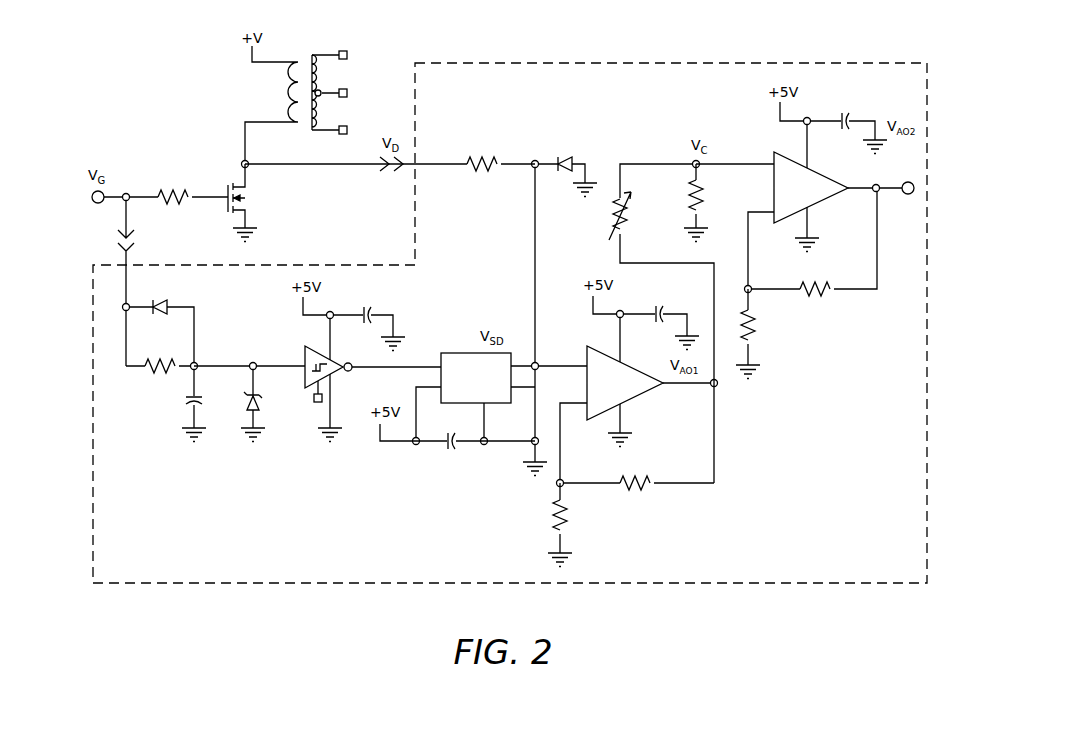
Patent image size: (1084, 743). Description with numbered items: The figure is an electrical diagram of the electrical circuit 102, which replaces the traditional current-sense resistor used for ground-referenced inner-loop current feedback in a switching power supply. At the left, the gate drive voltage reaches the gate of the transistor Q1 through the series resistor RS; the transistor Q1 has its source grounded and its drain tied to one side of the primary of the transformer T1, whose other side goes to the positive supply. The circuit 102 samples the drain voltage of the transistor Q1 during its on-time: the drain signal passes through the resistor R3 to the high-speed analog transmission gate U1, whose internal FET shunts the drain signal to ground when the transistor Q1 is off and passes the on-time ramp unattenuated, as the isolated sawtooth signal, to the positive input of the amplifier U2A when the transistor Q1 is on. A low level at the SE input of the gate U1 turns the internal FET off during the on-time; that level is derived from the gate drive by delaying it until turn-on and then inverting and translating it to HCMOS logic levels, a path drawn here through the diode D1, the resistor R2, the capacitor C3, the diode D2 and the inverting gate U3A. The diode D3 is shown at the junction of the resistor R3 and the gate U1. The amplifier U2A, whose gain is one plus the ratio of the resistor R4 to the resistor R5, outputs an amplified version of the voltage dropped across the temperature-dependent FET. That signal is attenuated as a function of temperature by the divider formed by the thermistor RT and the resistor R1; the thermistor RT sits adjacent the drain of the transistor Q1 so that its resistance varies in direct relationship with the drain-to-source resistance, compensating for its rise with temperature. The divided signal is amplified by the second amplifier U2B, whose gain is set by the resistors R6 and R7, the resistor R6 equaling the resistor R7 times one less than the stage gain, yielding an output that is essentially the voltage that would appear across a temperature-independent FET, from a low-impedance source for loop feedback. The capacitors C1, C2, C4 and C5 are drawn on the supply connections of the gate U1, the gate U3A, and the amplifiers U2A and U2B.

The electrical circuit 102 is at (513, 63).
The transformer T1 is at (296, 105).
The transistor Q1 is at (252, 203).
The series resistor RS is at (173, 186).
The diode D1 is at (161, 324).
The zener diode D2 is at (263, 405).
The diode D3 is at (567, 166).
The divider resistor R1 is at (707, 203).
The resistor R2 is at (160, 354).
The resistor R3 is at (482, 153).
The resistor R4 is at (637, 472).
The resistor R5 is at (571, 525).
The resistor R6 is at (814, 243).
The resistor R7 is at (759, 334).
The electrical component (thermistor) RT is at (633, 216).
The capacitor C1 is at (449, 430).
The capacitor C2 is at (381, 318).
The capacitor C3 is at (204, 405).
The capacitor C4 is at (674, 317).
The capacitor C5 is at (860, 122).
The high-speed analog transmission gate U1 is at (474, 366).
The amplifier U2A is at (630, 382).
The operational amplifier U2B is at (816, 188).
The Schmitt-trigger inverter U3A is at (308, 380).